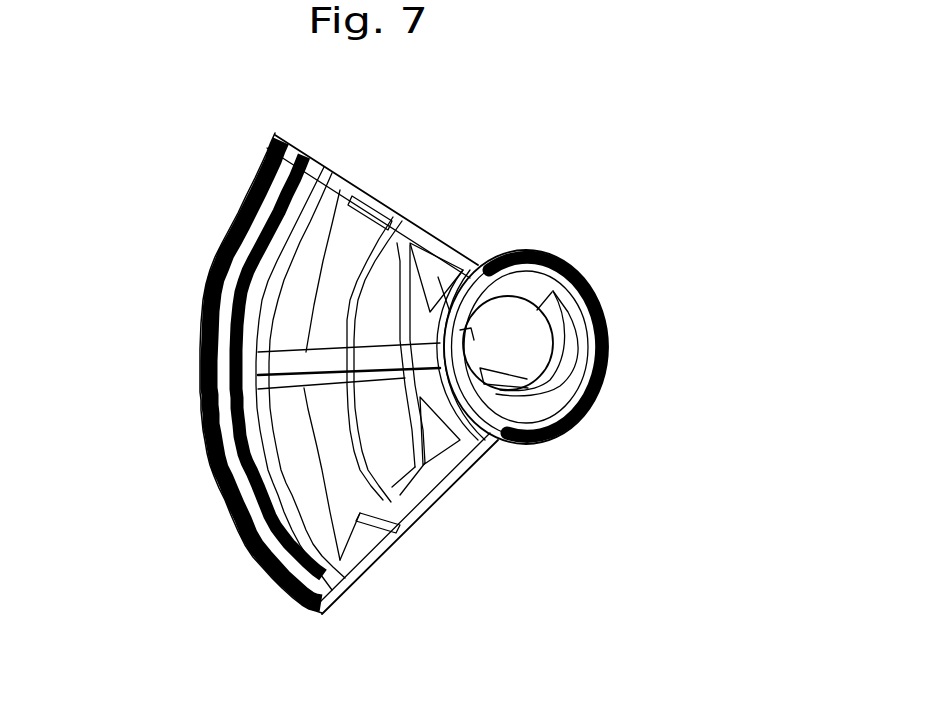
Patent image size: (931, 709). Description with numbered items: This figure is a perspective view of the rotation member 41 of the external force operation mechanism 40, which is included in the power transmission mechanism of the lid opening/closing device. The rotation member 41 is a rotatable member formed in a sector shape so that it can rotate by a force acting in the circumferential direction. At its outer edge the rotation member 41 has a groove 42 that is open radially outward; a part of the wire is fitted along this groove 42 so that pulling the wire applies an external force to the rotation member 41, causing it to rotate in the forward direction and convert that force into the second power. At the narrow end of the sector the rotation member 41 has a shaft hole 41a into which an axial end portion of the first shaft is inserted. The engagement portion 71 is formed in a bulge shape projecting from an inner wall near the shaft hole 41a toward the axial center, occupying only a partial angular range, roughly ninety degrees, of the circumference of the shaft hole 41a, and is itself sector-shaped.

The external force operation mechanism 40 is at (388, 569).
The rotation member 41 is at (397, 222).
The shaft hole 41a is at (521, 374).
The groove 42 is at (226, 510).
The engagement portion 71 is at (543, 292).